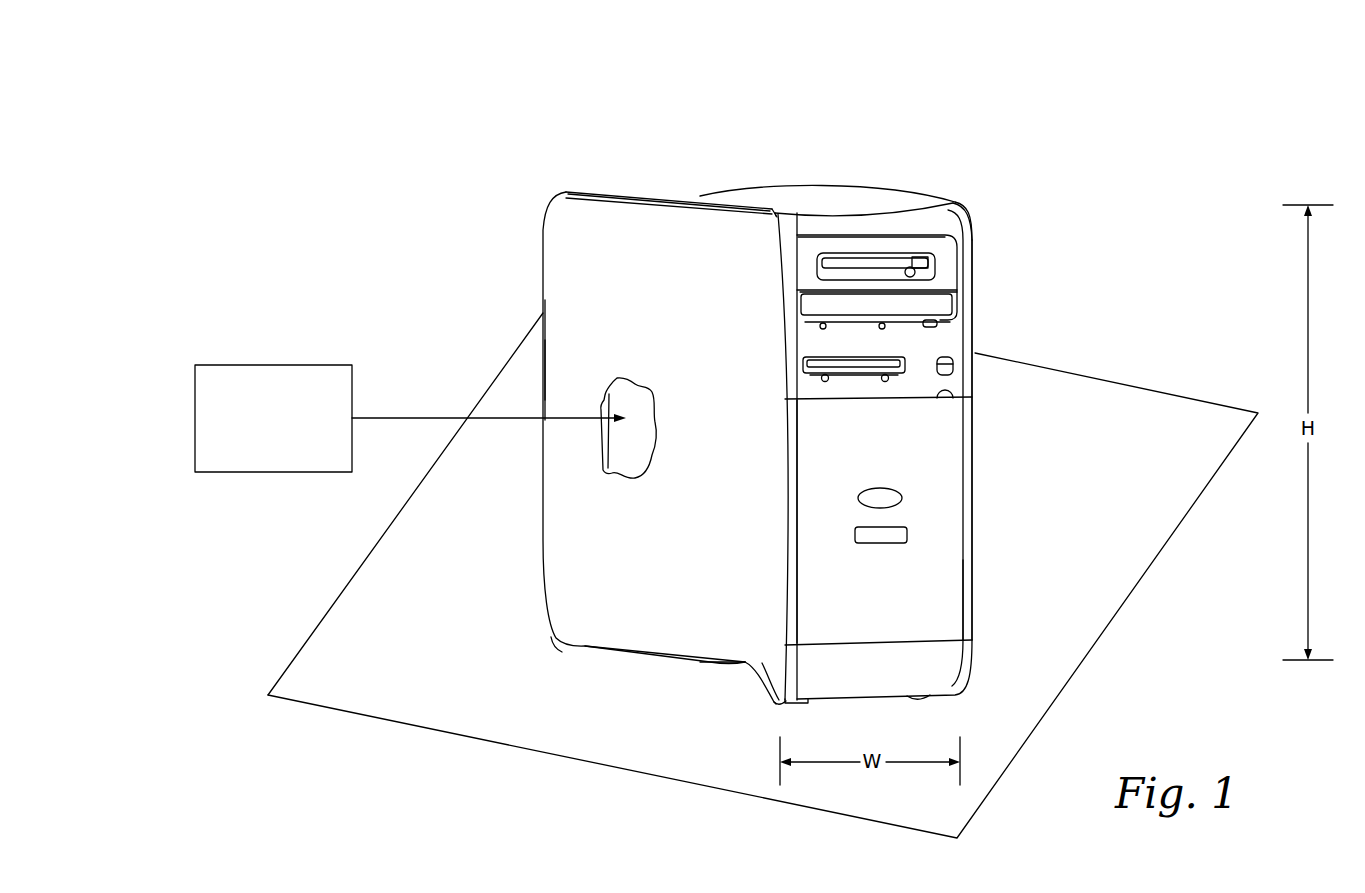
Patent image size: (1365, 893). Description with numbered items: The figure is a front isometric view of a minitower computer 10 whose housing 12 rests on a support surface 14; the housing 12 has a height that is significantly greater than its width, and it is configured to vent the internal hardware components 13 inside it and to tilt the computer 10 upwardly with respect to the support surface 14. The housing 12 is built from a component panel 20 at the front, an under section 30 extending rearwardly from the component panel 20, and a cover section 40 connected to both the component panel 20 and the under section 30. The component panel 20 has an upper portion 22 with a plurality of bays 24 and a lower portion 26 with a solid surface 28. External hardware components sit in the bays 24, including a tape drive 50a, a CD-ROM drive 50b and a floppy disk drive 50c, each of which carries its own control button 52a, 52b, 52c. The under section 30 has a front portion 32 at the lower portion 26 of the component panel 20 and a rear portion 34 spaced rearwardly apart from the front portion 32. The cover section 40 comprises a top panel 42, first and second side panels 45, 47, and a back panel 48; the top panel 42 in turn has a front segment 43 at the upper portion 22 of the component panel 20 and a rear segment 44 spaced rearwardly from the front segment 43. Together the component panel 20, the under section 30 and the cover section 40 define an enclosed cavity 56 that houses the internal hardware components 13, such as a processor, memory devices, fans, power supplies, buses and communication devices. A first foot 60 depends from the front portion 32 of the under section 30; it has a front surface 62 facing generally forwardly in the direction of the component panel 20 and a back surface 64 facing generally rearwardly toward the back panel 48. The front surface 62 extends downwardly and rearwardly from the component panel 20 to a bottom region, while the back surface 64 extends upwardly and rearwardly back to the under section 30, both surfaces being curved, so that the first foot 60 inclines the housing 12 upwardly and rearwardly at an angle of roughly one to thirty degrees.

The minitower computer 10 is at (469, 86).
The housing 12 is at (511, 173).
The internal hardware components 13 is at (247, 365).
The support surface 14 is at (1171, 410).
The component panel 20 is at (953, 423).
The upper portion 22 is at (952, 212).
The bays 24 is at (810, 239).
The lower portion 26 is at (955, 600).
The solid surface 28 is at (957, 507).
The under section 30 is at (662, 662).
The front portion 32 is at (730, 665).
The rear portion 34 is at (578, 648).
The cover section 40 is at (534, 252).
The top panel 42 is at (782, 195).
The front segment 43 is at (893, 200).
The rear segment 44 is at (742, 194).
The first side panel 45 is at (575, 297).
The second side panel 47 is at (972, 303).
The back panel 48 is at (540, 370).
The tape drive 50a is at (926, 249).
The CD-ROM drive 50b is at (946, 302).
The floppy disk drive 50c is at (805, 385).
The control button 52a is at (935, 272).
The control button 52b is at (942, 324).
The control button 52c is at (887, 382).
The enclosed cavity 56 is at (618, 437).
The first foot 60 is at (773, 715).
The front surface 62 is at (933, 672).
The back surface 64 is at (753, 687).